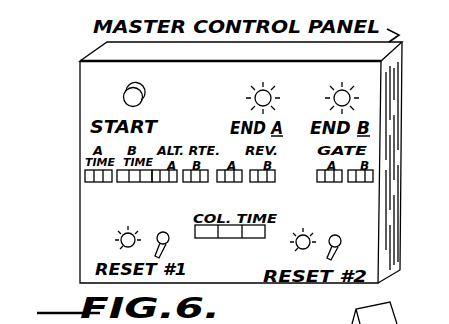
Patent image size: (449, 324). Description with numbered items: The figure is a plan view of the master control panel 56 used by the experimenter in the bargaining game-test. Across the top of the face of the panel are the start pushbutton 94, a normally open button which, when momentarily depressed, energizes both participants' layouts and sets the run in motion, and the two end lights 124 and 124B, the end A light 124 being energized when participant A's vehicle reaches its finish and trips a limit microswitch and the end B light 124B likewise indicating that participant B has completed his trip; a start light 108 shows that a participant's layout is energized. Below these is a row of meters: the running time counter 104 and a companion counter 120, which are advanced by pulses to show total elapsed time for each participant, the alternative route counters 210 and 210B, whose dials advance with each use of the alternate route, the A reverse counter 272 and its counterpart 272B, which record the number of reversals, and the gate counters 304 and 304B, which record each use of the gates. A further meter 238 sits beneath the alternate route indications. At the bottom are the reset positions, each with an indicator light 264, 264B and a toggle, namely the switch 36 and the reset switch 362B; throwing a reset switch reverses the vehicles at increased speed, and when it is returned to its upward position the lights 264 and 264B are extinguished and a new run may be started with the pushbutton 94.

The master control panel 56 is at (95, 51).
The start pushbutton 94 is at (130, 87).
The end A light 124 is at (250, 88).
The end B light 124B is at (333, 88).
The running time counter 104 is at (98, 182).
The start B time switch 120 is at (131, 182).
The alternative route counter 210 is at (165, 182).
The alternate route B switch 210B is at (196, 182).
The A reverse counter 272 is at (230, 182).
The reverse B switch 272B is at (263, 182).
The A gate counter 304 is at (330, 182).
The B gate counter 304B is at (362, 182).
The collection time switch 238 is at (212, 240).
The light 264 is at (113, 237).
The reset 1 toggle switch 36 is at (179, 246).
The light 264B is at (318, 224).
The reset switch 362B is at (343, 242).
The start light 108 is at (448, 181).